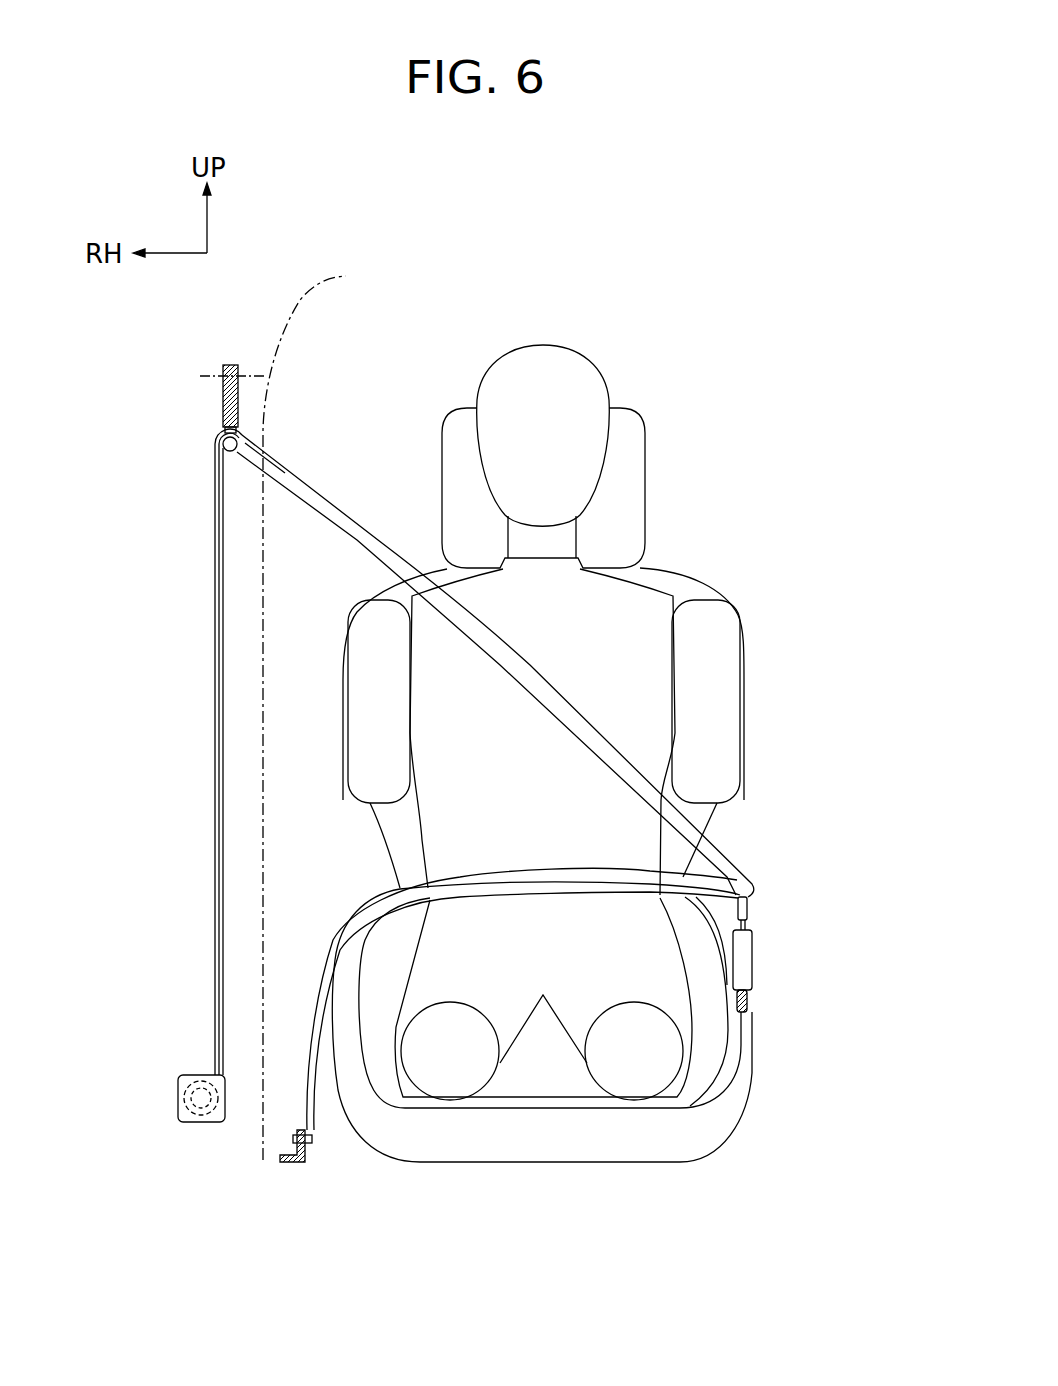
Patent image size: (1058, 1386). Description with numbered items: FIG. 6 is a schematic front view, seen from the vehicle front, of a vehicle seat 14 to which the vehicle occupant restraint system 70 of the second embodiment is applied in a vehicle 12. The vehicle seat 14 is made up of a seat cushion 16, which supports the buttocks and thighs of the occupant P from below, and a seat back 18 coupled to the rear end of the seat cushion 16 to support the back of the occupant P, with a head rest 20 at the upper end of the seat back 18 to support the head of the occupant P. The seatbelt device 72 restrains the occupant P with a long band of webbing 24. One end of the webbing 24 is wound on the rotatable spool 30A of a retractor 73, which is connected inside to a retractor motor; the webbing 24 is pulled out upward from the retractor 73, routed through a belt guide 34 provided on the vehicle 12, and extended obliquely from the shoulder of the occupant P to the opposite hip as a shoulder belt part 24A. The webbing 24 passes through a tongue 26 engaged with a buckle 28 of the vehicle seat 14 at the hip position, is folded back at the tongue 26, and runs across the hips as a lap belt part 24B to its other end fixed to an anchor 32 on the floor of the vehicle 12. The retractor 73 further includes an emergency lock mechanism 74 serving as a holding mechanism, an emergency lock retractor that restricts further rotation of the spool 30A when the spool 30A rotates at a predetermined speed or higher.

The vehicle 12 is at (713, 338).
The vehicle occupant restraint system 70 is at (473, 734).
The vehicle seat 14 is at (647, 477).
The seat cushion 16 is at (753, 1072).
The seat back 18 is at (735, 610).
The head rest 20 is at (645, 418).
The occupant P is at (582, 353).
The webbing 24 is at (340, 500).
The shoulder belt part 24A is at (612, 737).
The lap belt part 24B is at (610, 868).
The tongue 26 is at (752, 917).
The buckle 28 is at (753, 963).
The anchor 32 is at (293, 1163).
The belt guide 34 is at (222, 410).
The seatbelt device 72 is at (187, 593).
The retractor 73 is at (190, 1124).
The emergency lock mechanism 74 is at (177, 1100).
The spool 30A is at (190, 1075).